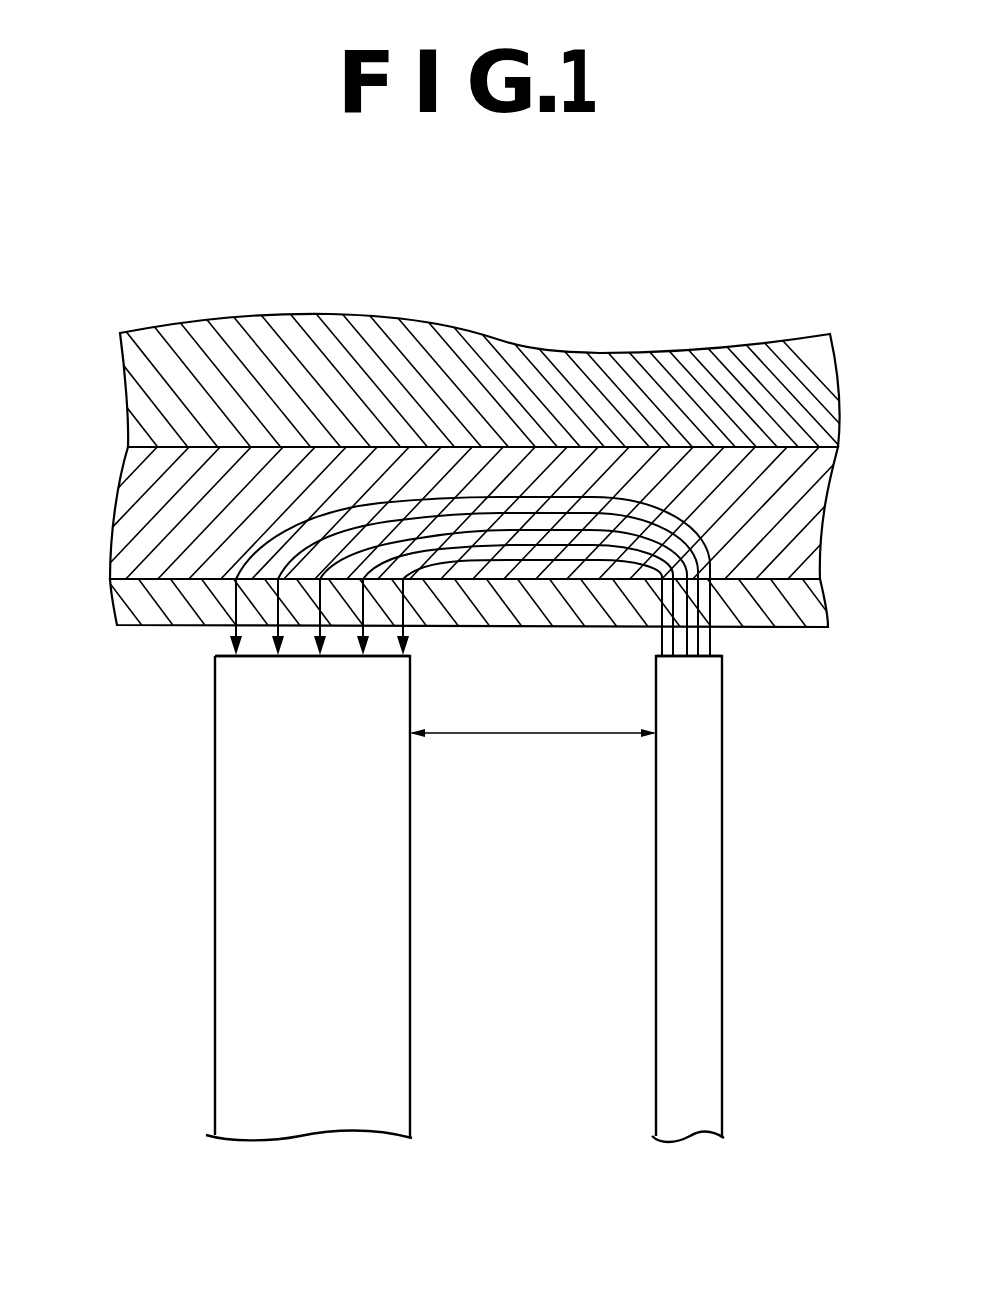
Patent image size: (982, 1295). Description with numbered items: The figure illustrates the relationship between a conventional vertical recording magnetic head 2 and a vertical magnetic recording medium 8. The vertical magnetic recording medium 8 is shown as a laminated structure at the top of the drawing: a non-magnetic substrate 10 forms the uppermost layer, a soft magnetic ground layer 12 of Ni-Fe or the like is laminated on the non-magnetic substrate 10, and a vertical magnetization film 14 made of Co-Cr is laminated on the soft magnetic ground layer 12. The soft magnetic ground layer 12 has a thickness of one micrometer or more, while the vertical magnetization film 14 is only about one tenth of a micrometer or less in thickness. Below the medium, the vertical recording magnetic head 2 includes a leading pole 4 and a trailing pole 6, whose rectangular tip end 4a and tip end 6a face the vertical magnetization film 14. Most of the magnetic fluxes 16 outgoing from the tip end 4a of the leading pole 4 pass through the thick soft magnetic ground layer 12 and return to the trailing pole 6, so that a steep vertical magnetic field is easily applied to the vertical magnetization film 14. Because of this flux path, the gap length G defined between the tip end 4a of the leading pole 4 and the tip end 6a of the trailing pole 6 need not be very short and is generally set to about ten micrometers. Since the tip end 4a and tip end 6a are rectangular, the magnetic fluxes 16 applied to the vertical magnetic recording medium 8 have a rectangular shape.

The vertical recording magnetic head 2 is at (489, 682).
The leading pole 4 is at (747, 889).
The tip end of the leading pole 4a is at (704, 655).
The trailing pole 6 is at (263, 888).
The tip end of the trailing pole 6a is at (256, 655).
The vertical magnetic recording medium 8 is at (489, 427).
The non-magnetic substrate 10 is at (264, 326).
The soft magnetic ground layer 12 is at (126, 520).
The vertical magnetization film 14 is at (118, 604).
The magnetic fluxes 16 is at (520, 559).
The gap length G is at (533, 751).